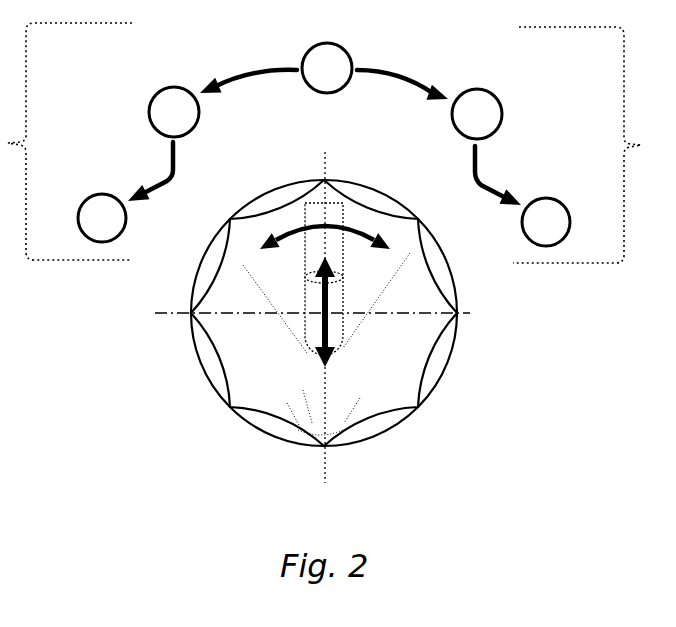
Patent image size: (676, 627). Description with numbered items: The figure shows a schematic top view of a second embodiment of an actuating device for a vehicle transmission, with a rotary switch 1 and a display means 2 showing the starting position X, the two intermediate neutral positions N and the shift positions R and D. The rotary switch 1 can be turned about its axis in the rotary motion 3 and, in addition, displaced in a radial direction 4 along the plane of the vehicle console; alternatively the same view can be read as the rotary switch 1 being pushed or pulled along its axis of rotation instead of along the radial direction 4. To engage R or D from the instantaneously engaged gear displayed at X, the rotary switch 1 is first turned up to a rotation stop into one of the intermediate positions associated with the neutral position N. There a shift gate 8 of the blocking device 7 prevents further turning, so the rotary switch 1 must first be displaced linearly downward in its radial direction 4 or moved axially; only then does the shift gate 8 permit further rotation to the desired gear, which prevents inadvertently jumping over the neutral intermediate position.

The rotary switch 1 is at (387, 395).
The display means 2 is at (338, 143).
The rotary motion 3 is at (348, 226).
The radial direction 4 is at (327, 307).
The blocking device 7 is at (263, 295).
The shift gate 8 is at (297, 428).